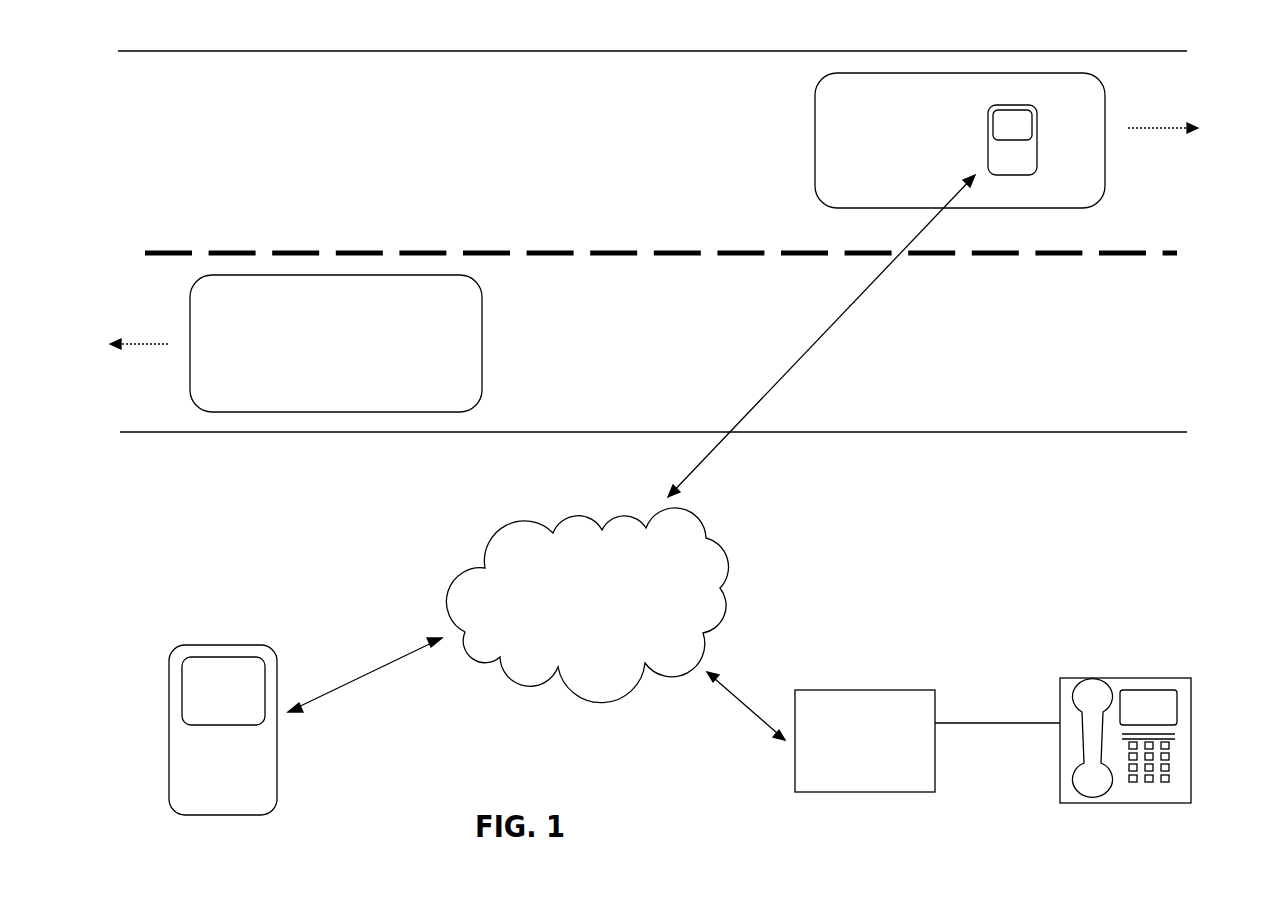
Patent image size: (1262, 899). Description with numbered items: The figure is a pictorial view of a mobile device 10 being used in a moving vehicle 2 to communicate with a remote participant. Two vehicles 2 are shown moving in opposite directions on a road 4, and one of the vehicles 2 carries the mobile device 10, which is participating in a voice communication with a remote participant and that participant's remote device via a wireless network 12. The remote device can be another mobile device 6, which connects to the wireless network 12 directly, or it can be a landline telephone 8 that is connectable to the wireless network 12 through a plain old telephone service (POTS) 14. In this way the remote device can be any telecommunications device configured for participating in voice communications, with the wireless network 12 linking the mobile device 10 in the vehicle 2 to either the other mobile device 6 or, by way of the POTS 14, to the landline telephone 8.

The vehicle 2 is at (1105, 92).
The road 4 is at (539, 147).
The mobile device 6 is at (277, 657).
The landline telephone 8 is at (1191, 742).
The mobile device 10 is at (1037, 122).
The wireless network 12 is at (723, 543).
The plain old telephone service (POTS) 14 is at (935, 775).